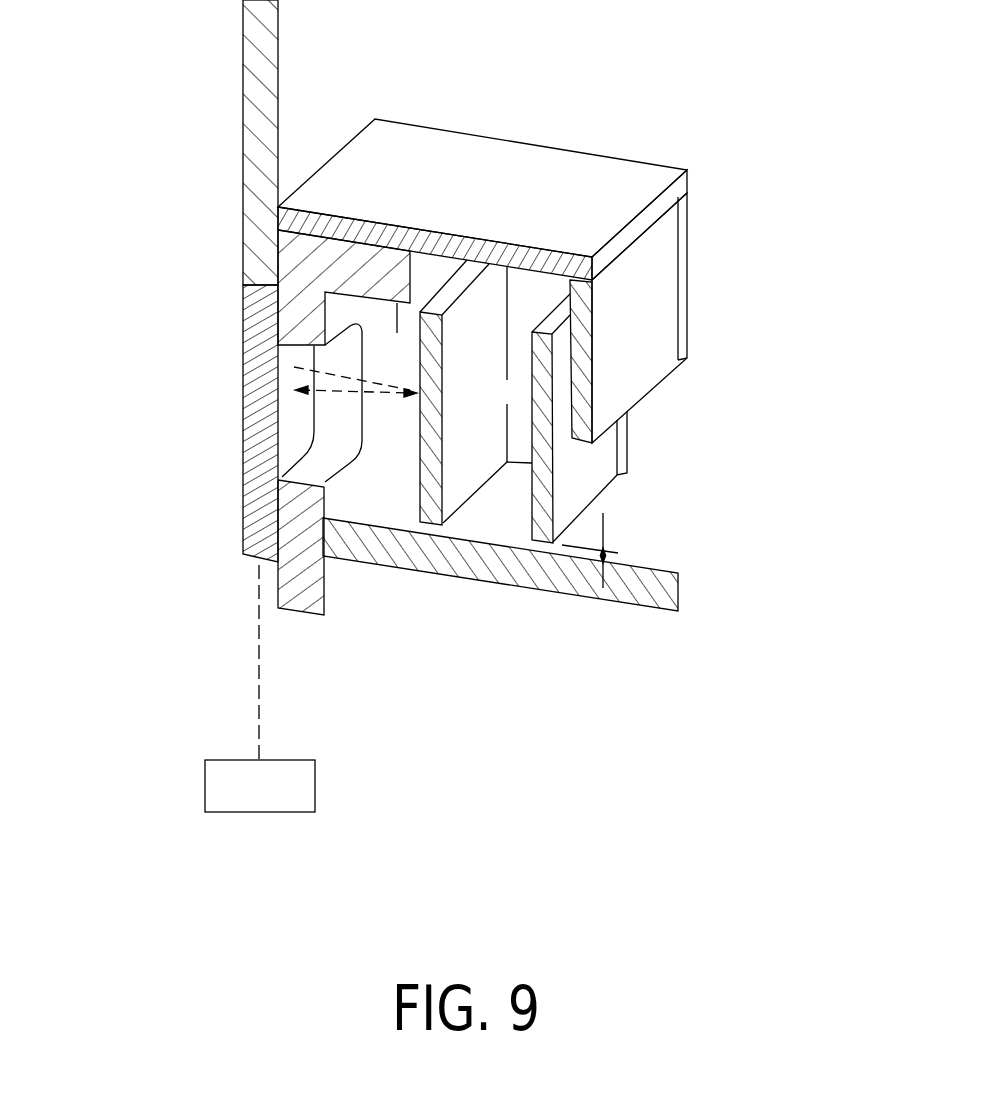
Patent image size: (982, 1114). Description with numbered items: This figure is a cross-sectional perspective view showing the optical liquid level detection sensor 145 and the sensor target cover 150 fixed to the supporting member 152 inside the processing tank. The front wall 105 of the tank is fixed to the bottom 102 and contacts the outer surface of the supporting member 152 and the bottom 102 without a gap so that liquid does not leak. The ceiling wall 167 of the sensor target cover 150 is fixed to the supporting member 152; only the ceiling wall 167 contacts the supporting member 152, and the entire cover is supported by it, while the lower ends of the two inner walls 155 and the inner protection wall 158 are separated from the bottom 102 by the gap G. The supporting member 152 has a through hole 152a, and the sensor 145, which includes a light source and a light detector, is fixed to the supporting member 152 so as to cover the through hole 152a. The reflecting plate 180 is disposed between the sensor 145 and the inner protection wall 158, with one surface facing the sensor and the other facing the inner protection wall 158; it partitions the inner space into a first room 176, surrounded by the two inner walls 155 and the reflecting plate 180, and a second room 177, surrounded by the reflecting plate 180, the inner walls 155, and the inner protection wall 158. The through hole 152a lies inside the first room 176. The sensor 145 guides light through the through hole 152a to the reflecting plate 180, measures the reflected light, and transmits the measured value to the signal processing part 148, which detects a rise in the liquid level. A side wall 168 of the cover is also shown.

The front wall 105 is at (243, 102).
The optical liquid level detection sensor 145 is at (240, 386).
The supporting member 152 is at (343, 582).
The through hole 152a is at (332, 436).
The bottom 102 is at (635, 607).
The signal processing part 148 is at (255, 814).
The sensor target cover 150 is at (661, 138).
The ceiling wall 167 is at (542, 170).
The side wall 168 is at (655, 303).
The first room 176 is at (412, 363).
The second room 177 is at (521, 406).
The reflecting plate 180 is at (468, 478).
The inner wall 155 is at (622, 427).
The inner protection wall 158 is at (598, 480).